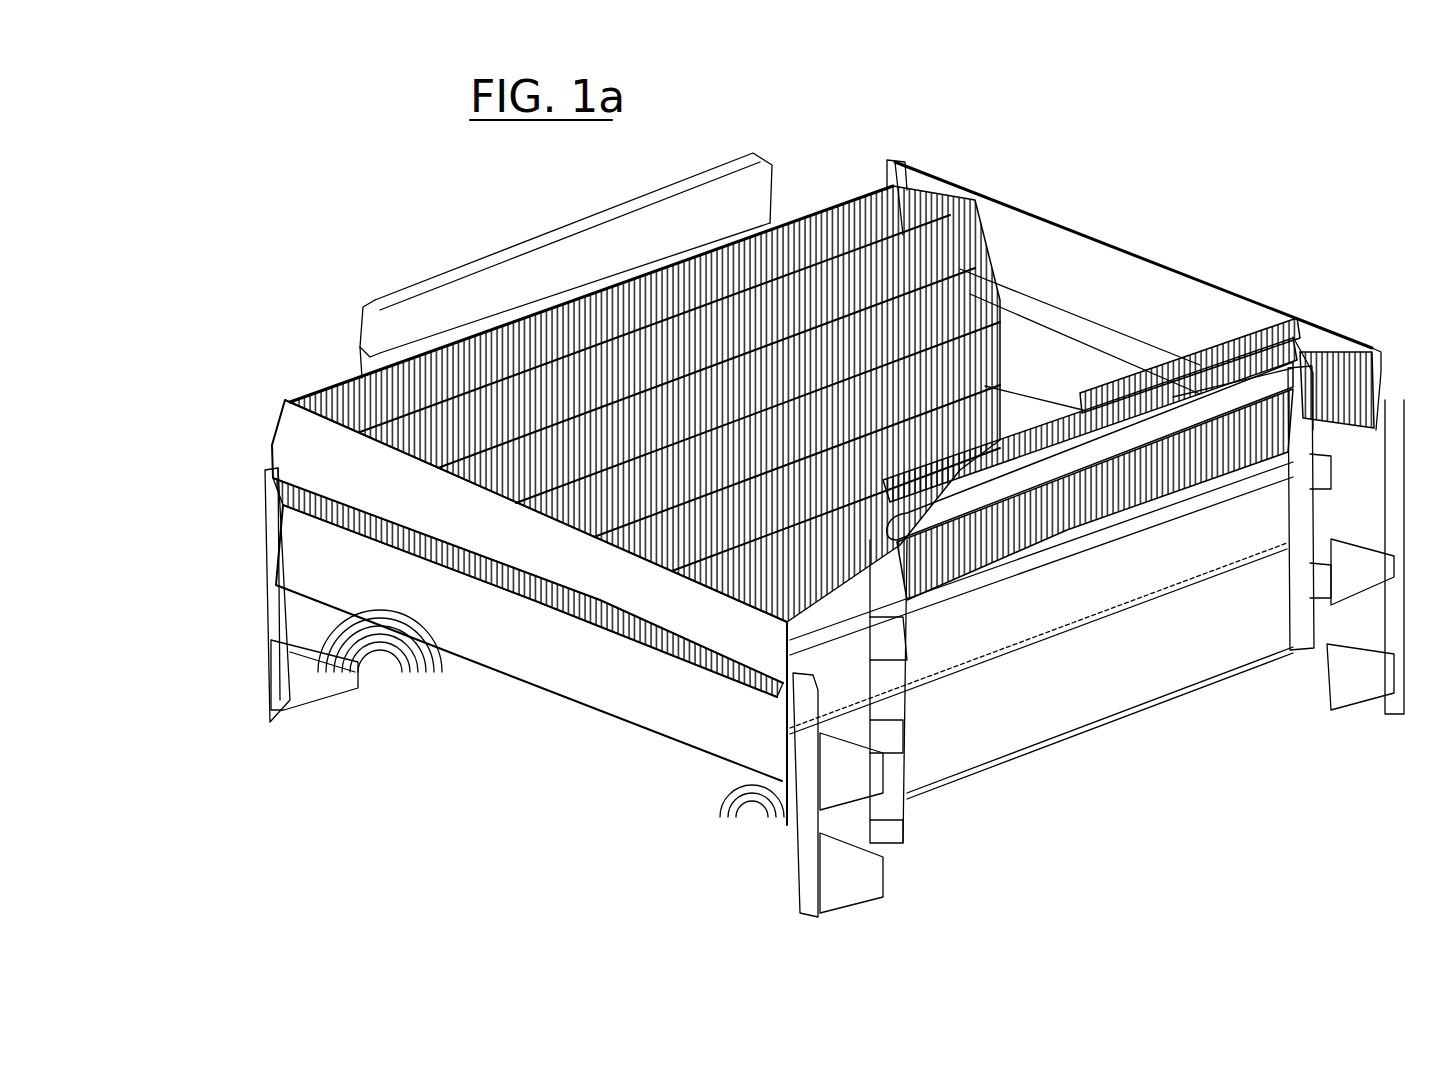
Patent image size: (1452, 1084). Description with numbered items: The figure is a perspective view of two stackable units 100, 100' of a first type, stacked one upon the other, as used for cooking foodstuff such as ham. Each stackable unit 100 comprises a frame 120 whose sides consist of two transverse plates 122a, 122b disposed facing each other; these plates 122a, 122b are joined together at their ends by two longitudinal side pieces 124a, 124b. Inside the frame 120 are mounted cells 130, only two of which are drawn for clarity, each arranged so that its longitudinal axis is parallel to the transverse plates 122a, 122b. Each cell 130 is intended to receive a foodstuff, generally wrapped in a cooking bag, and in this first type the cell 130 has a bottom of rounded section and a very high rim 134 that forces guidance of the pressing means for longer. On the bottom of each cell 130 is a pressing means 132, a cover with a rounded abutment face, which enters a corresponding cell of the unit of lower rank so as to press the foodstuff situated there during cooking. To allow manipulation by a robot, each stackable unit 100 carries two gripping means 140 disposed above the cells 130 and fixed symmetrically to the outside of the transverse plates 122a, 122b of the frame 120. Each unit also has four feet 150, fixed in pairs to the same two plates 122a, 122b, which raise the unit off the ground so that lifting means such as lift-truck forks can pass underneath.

The stackable unit 100 is at (1125, 698).
The stackable unit 100' is at (1122, 820).
The frame 120 is at (1132, 246).
The transverse plate 122a is at (1140, 568).
The transverse plate 122b is at (267, 480).
The longitudinal side piece 124a is at (1160, 263).
The longitudinal side piece 124b is at (548, 560).
The cell 130 is at (980, 262).
The pressing means 132 is at (376, 670).
The rim 134 is at (907, 185).
The gripping means 140 is at (463, 267).
The foot 150 is at (807, 710).